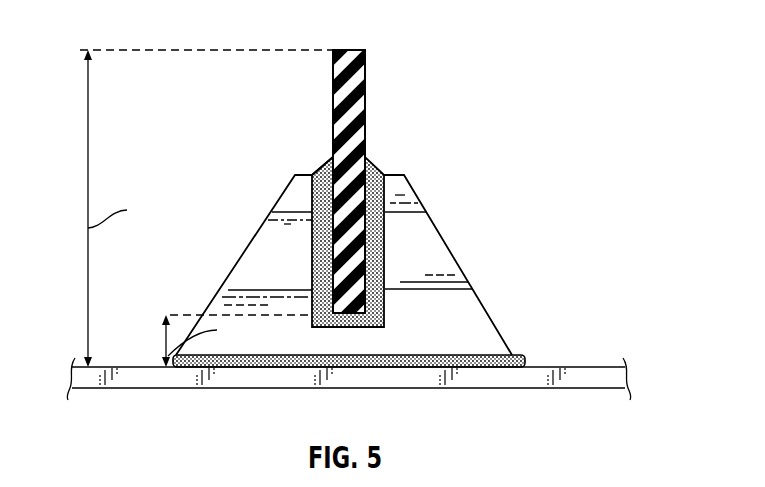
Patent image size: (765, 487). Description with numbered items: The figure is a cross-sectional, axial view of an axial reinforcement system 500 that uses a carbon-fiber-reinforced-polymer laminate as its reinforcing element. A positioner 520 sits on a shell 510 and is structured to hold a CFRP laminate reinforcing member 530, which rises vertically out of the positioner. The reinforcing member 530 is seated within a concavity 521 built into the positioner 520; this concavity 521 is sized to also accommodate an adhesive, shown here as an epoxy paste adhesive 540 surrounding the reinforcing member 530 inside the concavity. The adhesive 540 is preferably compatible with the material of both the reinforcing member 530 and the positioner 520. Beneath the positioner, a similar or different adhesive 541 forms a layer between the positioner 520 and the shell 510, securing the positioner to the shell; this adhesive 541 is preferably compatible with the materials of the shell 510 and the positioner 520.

The system 500 is at (125, 37).
The shell 510 is at (124, 367).
The positioner 520 is at (259, 234).
The concavity 521 is at (311, 199).
The CFRP laminate reinforcing member 530 is at (365, 128).
The epoxy paste adhesive 540 is at (385, 237).
The adhesive 541 is at (512, 353).